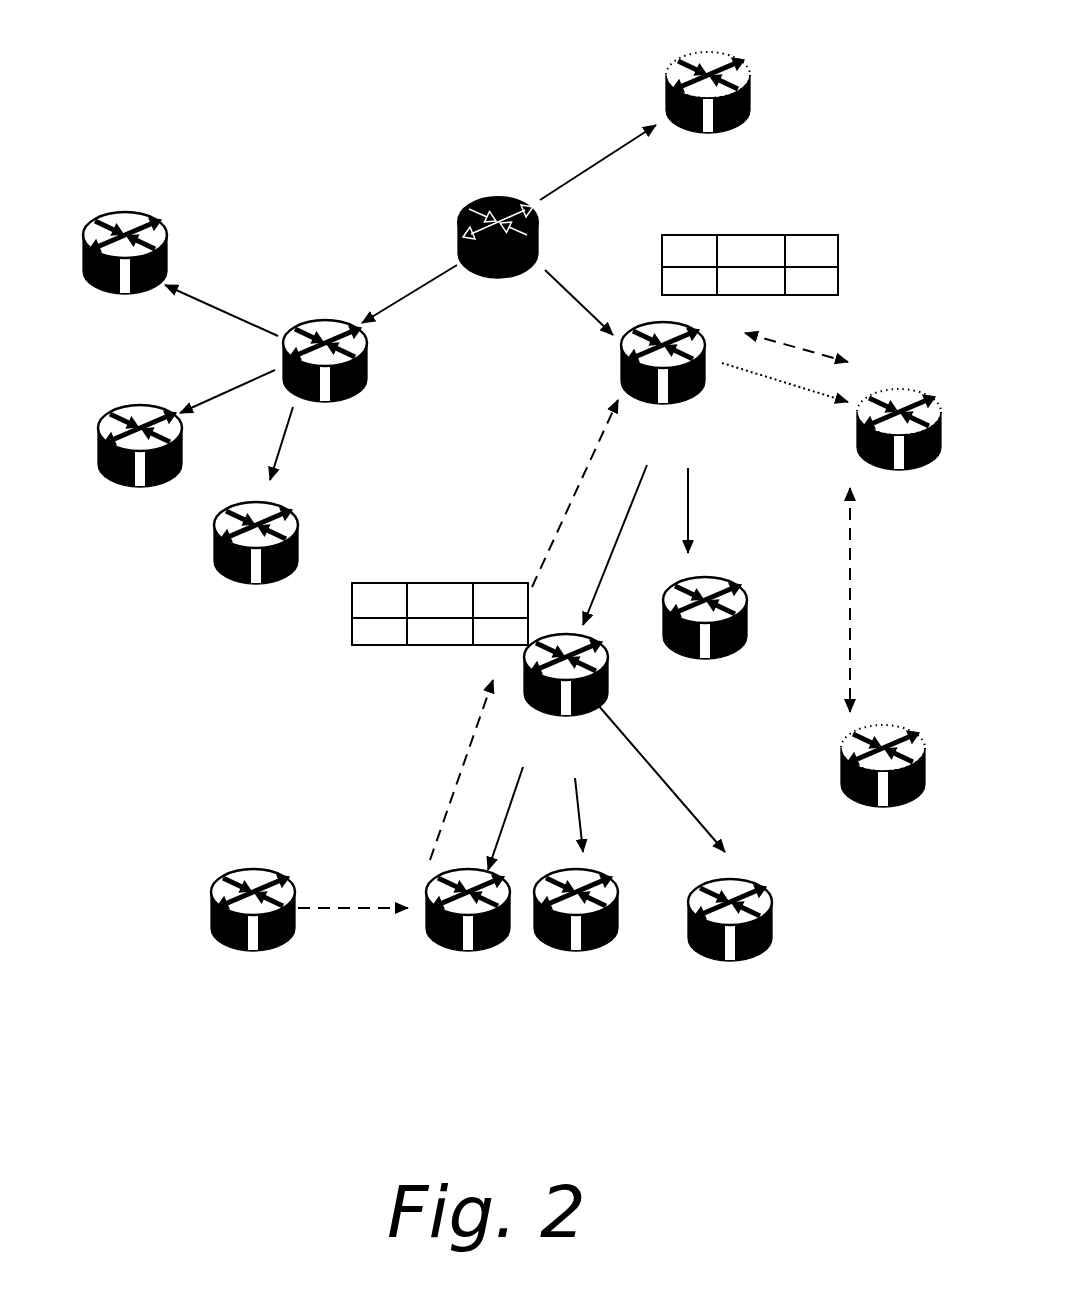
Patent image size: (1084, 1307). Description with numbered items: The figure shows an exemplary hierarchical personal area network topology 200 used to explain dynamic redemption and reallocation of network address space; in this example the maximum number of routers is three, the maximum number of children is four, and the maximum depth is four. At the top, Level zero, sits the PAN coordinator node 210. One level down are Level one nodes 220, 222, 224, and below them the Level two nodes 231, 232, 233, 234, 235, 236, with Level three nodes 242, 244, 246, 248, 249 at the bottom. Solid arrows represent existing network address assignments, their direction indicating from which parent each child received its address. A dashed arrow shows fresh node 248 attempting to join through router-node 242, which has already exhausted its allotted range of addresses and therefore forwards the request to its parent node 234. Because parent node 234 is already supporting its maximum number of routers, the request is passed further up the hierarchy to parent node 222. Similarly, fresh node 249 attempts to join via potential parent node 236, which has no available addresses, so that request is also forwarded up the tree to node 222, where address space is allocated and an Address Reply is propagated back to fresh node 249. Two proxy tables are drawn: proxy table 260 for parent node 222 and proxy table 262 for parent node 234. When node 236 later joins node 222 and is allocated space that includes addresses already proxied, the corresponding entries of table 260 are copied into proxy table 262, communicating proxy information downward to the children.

The network topology 200 is at (208, 1102).
The PAN coordinator node 210 is at (465, 210).
The Level 1 node 220 is at (740, 65).
The Level 1 parent node 222 is at (622, 365).
The Level 1 node 224 is at (355, 400).
The Level 2 node 231 is at (110, 212).
The Level 2 node 232 is at (115, 405).
The Level 2 node 233 is at (290, 520).
The Level 2 parent node 234 is at (608, 680).
The Level 2 node 235 is at (705, 580).
The potential parent node 236 is at (893, 395).
The router-node 242 is at (495, 940).
The Level 3 node 244 is at (598, 948).
The Level 3 node 246 is at (735, 950).
The fresh node 248 is at (230, 880).
The fresh node 249 is at (845, 785).
The proxy table 260 is at (838, 258).
The proxy table 262 is at (420, 645).